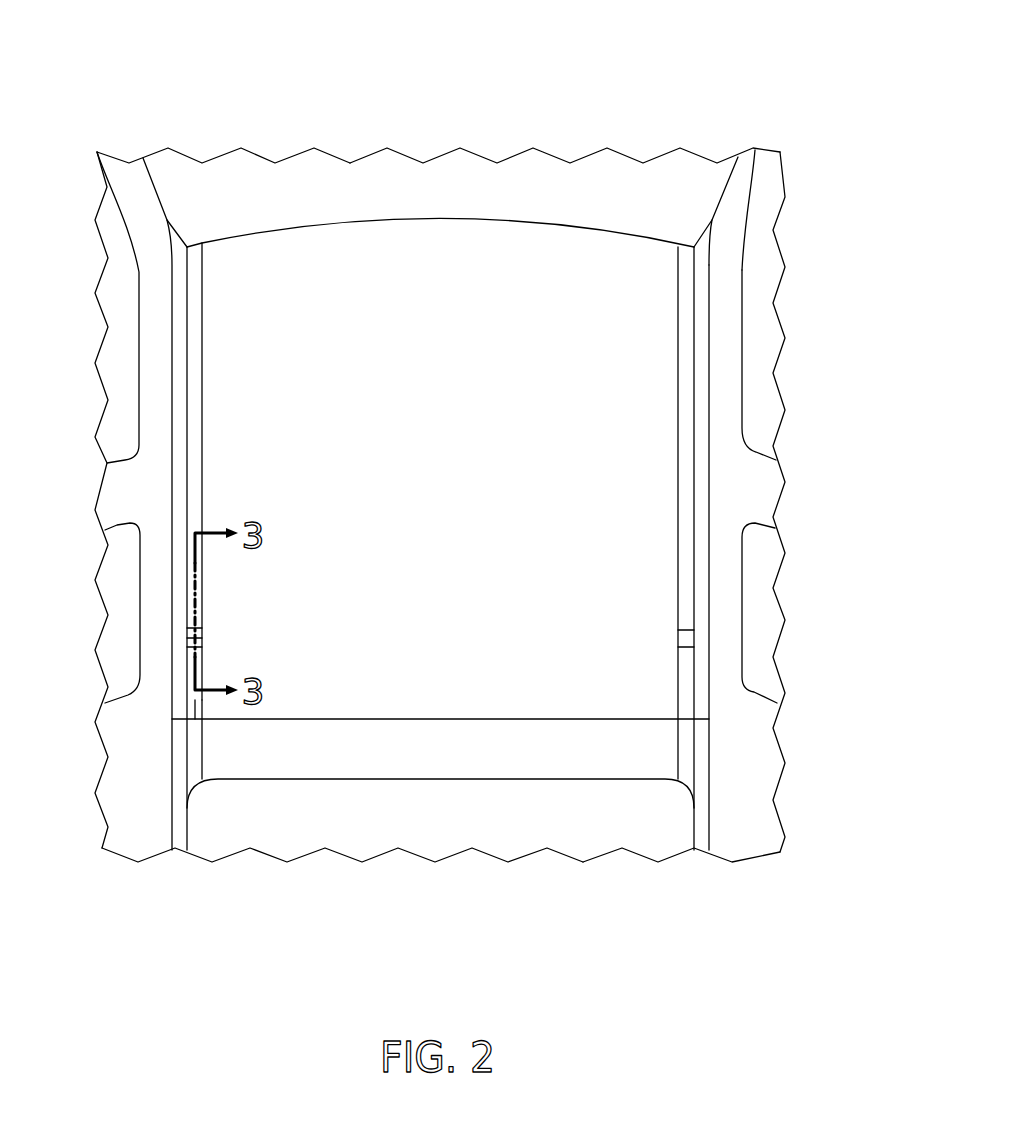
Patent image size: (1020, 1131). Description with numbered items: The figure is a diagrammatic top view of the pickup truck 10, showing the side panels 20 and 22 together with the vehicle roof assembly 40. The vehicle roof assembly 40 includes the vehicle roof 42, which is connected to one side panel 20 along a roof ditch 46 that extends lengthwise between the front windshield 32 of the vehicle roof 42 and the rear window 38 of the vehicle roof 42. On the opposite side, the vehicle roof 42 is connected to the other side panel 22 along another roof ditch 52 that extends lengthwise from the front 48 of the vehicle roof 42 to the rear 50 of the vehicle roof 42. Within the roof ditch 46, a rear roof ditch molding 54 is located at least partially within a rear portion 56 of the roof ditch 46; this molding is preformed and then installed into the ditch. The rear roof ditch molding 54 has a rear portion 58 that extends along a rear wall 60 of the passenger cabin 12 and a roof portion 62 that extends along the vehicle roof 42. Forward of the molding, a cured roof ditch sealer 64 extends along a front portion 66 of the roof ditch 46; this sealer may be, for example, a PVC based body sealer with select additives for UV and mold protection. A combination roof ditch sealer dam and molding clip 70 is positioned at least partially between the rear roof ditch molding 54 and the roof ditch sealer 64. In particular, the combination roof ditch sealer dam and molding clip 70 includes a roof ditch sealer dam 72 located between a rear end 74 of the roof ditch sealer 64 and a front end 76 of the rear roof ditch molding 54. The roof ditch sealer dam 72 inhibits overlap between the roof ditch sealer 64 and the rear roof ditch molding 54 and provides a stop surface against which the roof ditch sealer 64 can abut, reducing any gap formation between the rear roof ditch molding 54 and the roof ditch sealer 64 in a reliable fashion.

The pickup truck 10 is at (807, 120).
The passenger cabin 12 is at (752, 615).
The side panel 20 is at (125, 497).
The side panel 22 is at (752, 495).
The front windshield 32 is at (222, 165).
The rear window 38 is at (602, 843).
The vehicle roof assembly 40 is at (615, 258).
The vehicle roof 42 is at (295, 245).
The roof ditch 46 is at (202, 503).
The front of the vehicle roof 48 is at (560, 113).
The rear of the vehicle roof 50 is at (308, 883).
The roof ditch 52 is at (678, 398).
The rear roof ditch molding 54 is at (207, 707).
The rear portion of the roof ditch 56 is at (152, 708).
The rear portion of the rear roof ditch molding 58 is at (203, 758).
The rear wall of the passenger cabin 60 is at (440, 772).
The roof portion of the rear roof ditch molding 62 is at (203, 658).
The cured roof ditch sealer 64 is at (197, 408).
The front portion of the roof ditch 66 is at (220, 352).
The combination roof ditch sealer dam and molding clip 70 is at (200, 614).
The roof ditch sealer dam 72 is at (193, 638).
The rear end of the roof ditch sealer 74 is at (193, 607).
The front end of the rear roof ditch molding 76 is at (195, 705).